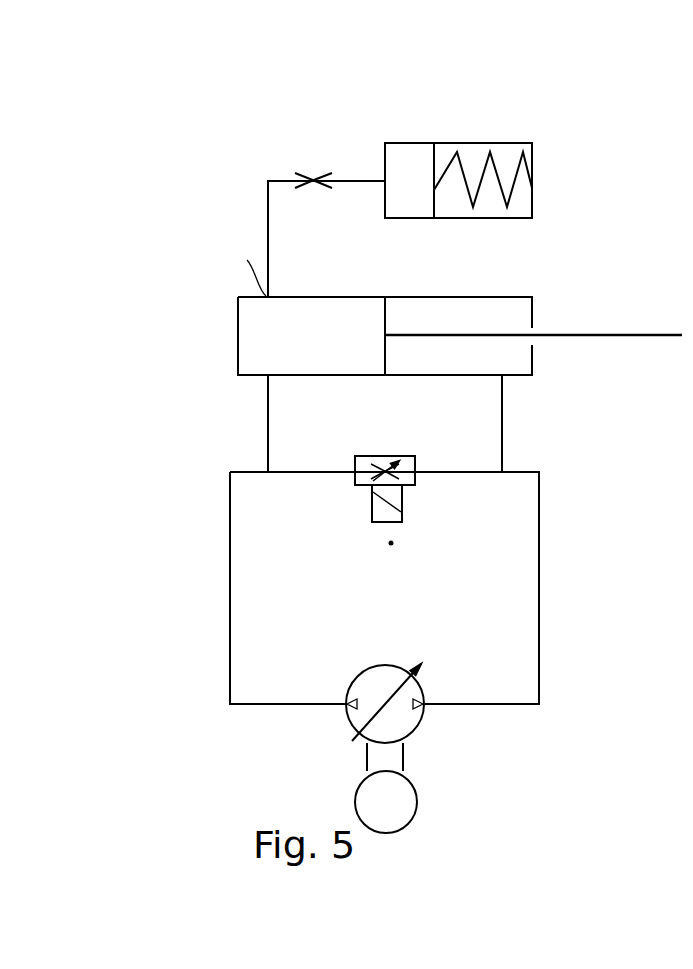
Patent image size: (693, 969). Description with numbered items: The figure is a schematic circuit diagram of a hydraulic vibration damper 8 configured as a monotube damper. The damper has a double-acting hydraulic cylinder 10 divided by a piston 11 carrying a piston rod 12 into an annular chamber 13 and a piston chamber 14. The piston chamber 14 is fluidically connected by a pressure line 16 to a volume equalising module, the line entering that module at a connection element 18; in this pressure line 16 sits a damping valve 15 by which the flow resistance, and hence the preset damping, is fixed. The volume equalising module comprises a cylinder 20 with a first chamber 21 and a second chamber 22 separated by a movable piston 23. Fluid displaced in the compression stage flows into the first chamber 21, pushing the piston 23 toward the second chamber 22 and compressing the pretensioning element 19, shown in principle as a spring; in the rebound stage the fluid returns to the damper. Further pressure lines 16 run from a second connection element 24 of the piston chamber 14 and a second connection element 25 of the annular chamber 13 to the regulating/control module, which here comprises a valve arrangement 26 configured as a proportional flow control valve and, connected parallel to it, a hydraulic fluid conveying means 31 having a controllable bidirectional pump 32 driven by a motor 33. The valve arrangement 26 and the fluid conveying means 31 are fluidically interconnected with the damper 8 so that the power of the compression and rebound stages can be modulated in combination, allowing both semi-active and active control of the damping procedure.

The hydraulic vibration damper 8 is at (200, 128).
The double-acting hydraulic cylinder 10 is at (442, 297).
The piston 11 is at (385, 310).
The piston rod 12 is at (636, 335).
The annular chamber 13 is at (520, 368).
The piston chamber 14 is at (251, 353).
The damping valve 15 is at (312, 176).
The pressure line 16 is at (268, 196).
The connection element 18 is at (385, 185).
The pretensioning element 19 is at (483, 150).
The cylinder 20 is at (532, 150).
The first chamber 21 is at (402, 150).
The second chamber 22 is at (521, 201).
The piston 23 is at (430, 150).
The second connection element 24 is at (270, 378).
The second connection element 25 is at (500, 378).
The valve arrangement 26 is at (415, 485).
The hydraulic fluid conveying means 31 is at (418, 752).
The bidirectional pump 32 is at (418, 716).
The motor 33 is at (405, 808).